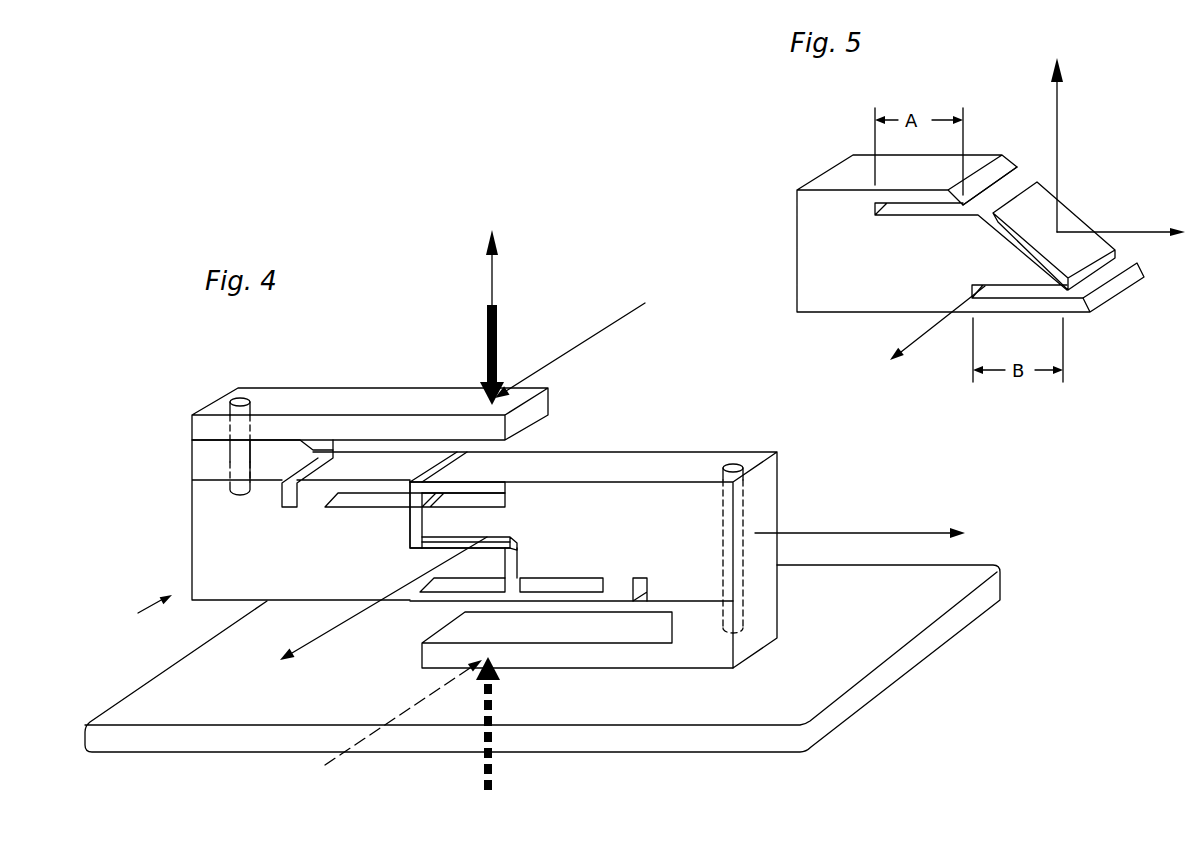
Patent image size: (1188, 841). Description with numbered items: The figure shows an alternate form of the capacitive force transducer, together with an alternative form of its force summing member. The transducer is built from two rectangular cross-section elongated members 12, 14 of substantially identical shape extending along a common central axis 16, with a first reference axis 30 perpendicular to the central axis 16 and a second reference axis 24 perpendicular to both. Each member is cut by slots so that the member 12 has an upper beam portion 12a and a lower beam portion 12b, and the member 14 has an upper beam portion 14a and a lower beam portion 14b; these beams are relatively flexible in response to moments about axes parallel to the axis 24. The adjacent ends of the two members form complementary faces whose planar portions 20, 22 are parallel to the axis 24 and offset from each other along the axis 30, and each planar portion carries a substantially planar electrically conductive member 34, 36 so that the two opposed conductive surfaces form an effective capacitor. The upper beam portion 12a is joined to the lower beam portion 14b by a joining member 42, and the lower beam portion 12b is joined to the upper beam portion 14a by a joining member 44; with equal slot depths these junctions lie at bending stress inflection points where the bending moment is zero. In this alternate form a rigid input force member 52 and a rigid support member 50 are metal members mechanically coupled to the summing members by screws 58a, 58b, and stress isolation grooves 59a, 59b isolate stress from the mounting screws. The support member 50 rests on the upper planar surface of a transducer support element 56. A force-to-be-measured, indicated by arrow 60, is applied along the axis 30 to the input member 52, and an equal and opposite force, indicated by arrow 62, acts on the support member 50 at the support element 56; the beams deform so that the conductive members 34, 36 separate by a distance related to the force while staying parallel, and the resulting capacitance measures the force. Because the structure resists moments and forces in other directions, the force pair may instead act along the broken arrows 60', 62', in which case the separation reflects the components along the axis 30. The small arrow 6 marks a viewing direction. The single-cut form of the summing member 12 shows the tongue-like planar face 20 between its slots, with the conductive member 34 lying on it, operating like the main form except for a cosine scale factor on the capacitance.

In FIG. 4, the viewing direction arrow 6 is at (145, 611).
In FIG. 4, the elongated member 12 is at (203, 535).
In FIG. 5, the elongated member 12 is at (843, 350).
In FIG. 4, the upper beam portion 12a is at (357, 490).
In FIG. 4, the lower beam portion 12b is at (440, 597).
In FIG. 4, the elongated member 14 is at (663, 490).
In FIG. 4, the upper beam portion 14a is at (556, 578).
In FIG. 4, the lower beam portion 14b is at (477, 488).
In FIG. 4, the central axis 16 is at (890, 532).
In FIG. 5, the central axis 16 is at (1130, 232).
In FIG. 4, the planar portion 20 is at (480, 542).
In FIG. 5, the planar portion 20 is at (1035, 177).
In FIG. 4, the planar portion 22 is at (497, 537).
In FIG. 4, the second reference axis 24 is at (328, 638).
In FIG. 5, the second reference axis 24 is at (933, 332).
In FIG. 4, the first reference axis 30 is at (494, 273).
In FIG. 5, the first reference axis 30 is at (1060, 100).
In FIG. 4, the electrically conductive member 34 is at (433, 550).
In FIG. 5, the electrically conductive member 34 is at (1068, 222).
In FIG. 4, the electrically conductive member 36 is at (443, 537).
In FIG. 4, the joining member 42 is at (458, 464).
In FIG. 4, the joining member 44 is at (512, 592).
In FIG. 4, the rigid support member 50 is at (715, 665).
In FIG. 4, the rigid input force member 52 is at (198, 430).
In FIG. 4, the transducer support element 56 is at (893, 668).
In FIG. 4, the screw 58a is at (232, 448).
In FIG. 4, the screw 58b is at (743, 578).
In FIG. 4, the stress isolation groove 59a is at (338, 448).
In FIG. 4, the stress isolation groove 59b is at (640, 603).
In FIG. 4, the arrow 60 is at (511, 355).
In FIG. 4, the broken arrow 60' is at (570, 350).
In FIG. 4, the arrow 62 is at (460, 723).
In FIG. 4, the broken arrow 62' is at (403, 712).